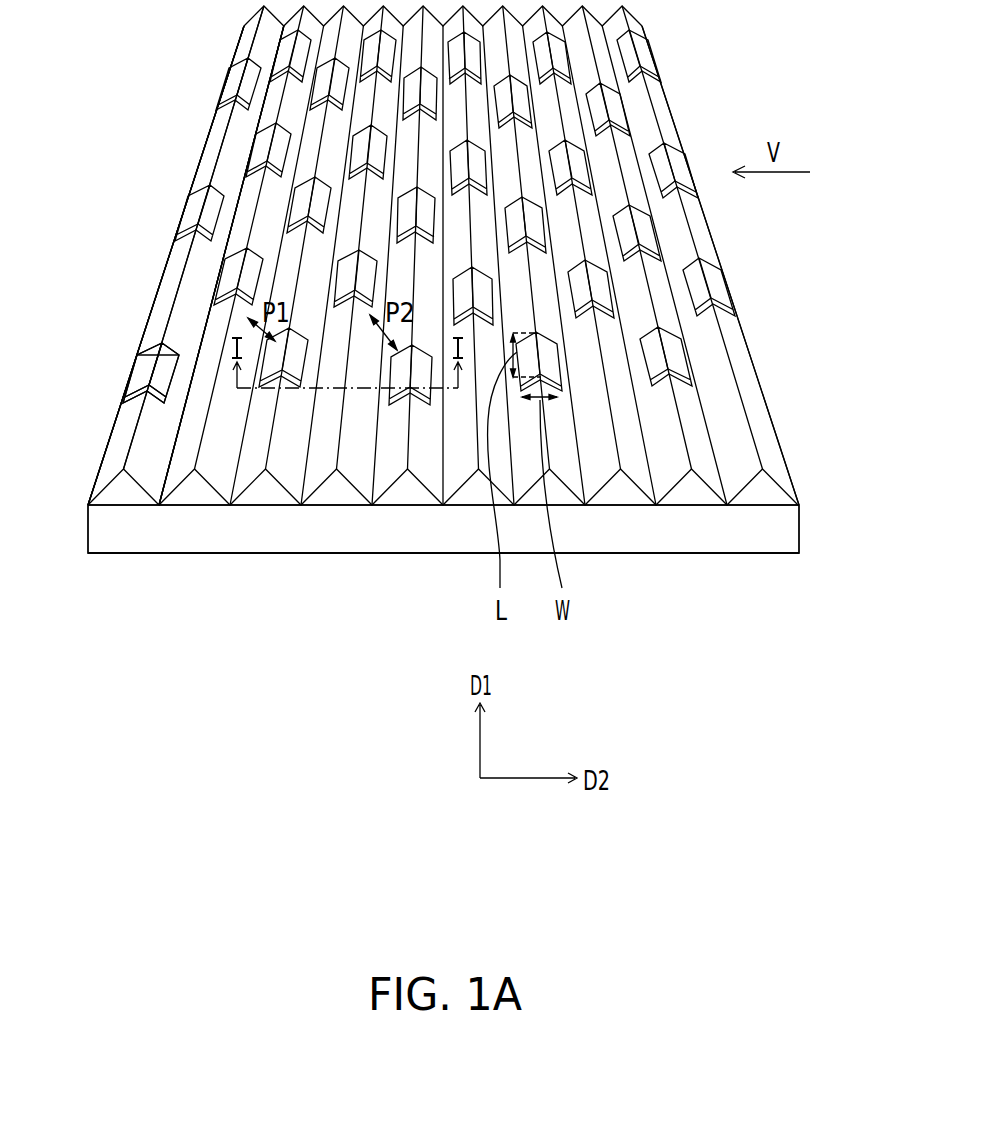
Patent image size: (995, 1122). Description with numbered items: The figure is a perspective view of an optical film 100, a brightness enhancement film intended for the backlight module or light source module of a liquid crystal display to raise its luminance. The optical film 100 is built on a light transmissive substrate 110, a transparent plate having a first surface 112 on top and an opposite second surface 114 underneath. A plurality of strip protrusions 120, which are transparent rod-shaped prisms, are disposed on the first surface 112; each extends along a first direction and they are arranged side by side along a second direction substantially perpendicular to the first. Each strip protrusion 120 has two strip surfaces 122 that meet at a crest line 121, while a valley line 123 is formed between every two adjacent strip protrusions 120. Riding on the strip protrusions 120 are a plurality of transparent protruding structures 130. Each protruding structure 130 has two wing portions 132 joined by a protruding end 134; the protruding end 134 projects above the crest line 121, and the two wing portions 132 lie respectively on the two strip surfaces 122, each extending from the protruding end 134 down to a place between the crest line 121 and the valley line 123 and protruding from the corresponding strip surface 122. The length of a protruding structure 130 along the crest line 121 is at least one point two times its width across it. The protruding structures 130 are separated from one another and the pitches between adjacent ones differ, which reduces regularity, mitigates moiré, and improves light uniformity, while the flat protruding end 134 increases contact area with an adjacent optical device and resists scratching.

The optical film 100 is at (818, 707).
The light transmissive substrate 110 is at (770, 532).
The first surface 112 is at (762, 488).
The second surface 114 is at (775, 555).
The strip protrusions 120 is at (773, 502).
The crest line 121 is at (223, 148).
The strip surfaces 122 is at (197, 282).
The valley line 123 is at (141, 505).
The protruding structures 130 is at (75, 258).
The wing portions 132 is at (172, 355).
The protruding end 134 is at (160, 363).